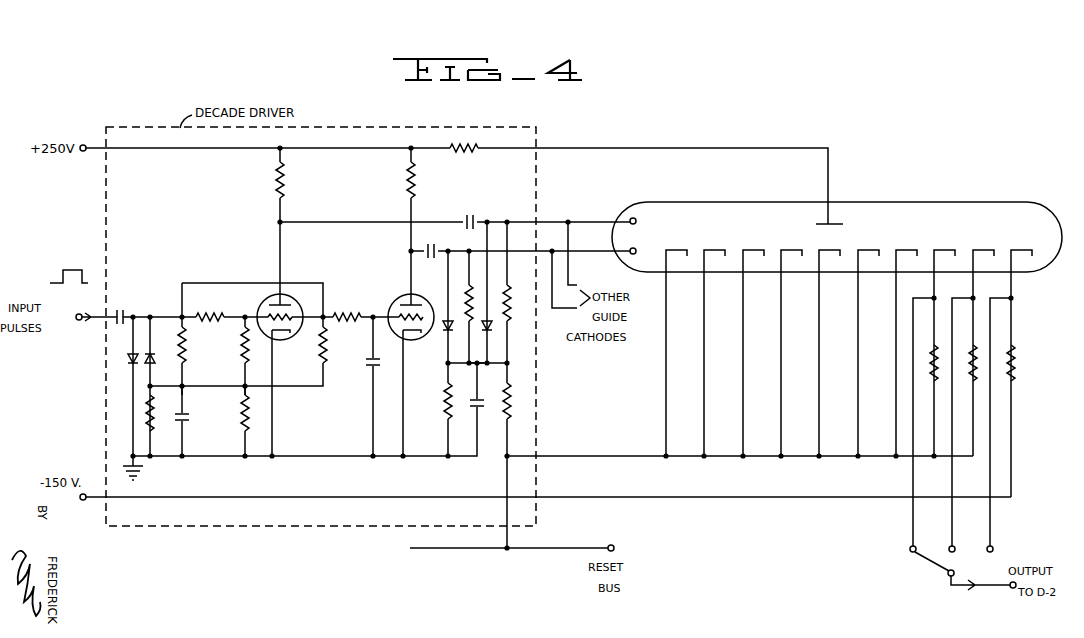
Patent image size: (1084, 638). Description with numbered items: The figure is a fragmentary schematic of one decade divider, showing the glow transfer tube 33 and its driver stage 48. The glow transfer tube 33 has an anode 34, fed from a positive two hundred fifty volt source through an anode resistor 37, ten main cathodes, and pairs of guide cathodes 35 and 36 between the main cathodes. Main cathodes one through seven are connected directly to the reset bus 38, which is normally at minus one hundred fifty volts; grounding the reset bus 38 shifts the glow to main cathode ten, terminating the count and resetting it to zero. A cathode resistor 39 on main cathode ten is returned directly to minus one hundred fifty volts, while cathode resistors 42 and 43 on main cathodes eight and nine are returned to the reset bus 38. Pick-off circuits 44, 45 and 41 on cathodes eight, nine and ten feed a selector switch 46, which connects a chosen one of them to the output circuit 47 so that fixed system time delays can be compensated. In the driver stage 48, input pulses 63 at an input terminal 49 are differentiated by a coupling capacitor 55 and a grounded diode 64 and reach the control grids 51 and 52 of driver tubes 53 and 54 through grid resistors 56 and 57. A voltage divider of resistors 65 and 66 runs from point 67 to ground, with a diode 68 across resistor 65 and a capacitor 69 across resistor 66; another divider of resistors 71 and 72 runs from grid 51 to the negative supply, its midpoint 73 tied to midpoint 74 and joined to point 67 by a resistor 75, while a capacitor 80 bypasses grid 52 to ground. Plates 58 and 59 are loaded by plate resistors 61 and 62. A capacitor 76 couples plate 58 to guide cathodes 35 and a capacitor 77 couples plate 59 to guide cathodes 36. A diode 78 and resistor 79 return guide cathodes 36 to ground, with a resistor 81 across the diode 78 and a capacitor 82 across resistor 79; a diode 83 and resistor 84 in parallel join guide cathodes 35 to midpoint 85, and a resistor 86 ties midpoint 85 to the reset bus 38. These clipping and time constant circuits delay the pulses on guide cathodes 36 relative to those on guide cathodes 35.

The glow transfer tube 33 is at (830, 336).
The anode 34 is at (832, 222).
The guide cathodes 35 is at (628, 218).
The guide cathodes 36 is at (628, 254).
The anode resistor 37 is at (478, 146).
The reset bus 38 is at (545, 544).
The cathode resistor 39 is at (1015, 358).
The pick-off circuit 41 is at (988, 518).
The cathode resistor 42 is at (928, 355).
The cathode resistor 43 is at (976, 367).
The pulse pick-off circuit 44 is at (910, 512).
The pulse pick-off circuit 45 is at (950, 518).
The selector switch 46 is at (932, 560).
The output circuit 47 is at (1002, 586).
The driver stage 48 is at (393, 127).
The input terminal 49 is at (77, 322).
The control grid 51 is at (290, 334).
The control grid 52 is at (401, 322).
The driver tube 53 is at (276, 358).
The driver tube 54 is at (406, 364).
The coupling capacitor 55 is at (120, 309).
The grid resistor 56 is at (214, 303).
The grid resistor 57 is at (336, 313).
The plate 58 is at (270, 306).
The plate 59 is at (400, 302).
The plate resistor 61 is at (285, 182).
The plate resistor 62 is at (416, 182).
The input pulses 63 is at (67, 267).
The diode 64 is at (127, 357).
The resistor 65 is at (186, 341).
The resistor 66 is at (153, 423).
The point 67 is at (178, 313).
The diode 68 is at (155, 359).
The capacitor 69 is at (186, 423).
The resistor 71 is at (241, 343).
The resistor 72 is at (249, 422).
The midpoint 73 is at (248, 388).
The midpoint 74 is at (184, 390).
The resistor 75 is at (327, 345).
The capacitor 76 is at (470, 213).
The capacitor 77 is at (431, 245).
The diode 78 is at (444, 331).
The resistor 79 is at (445, 401).
The capacitor 80 is at (367, 365).
The resistor 81 is at (464, 292).
The capacitor 82 is at (480, 410).
The diode 83 is at (492, 327).
The resistor 84 is at (509, 303).
The midpoint 85 is at (479, 366).
The resistor 86 is at (509, 416).